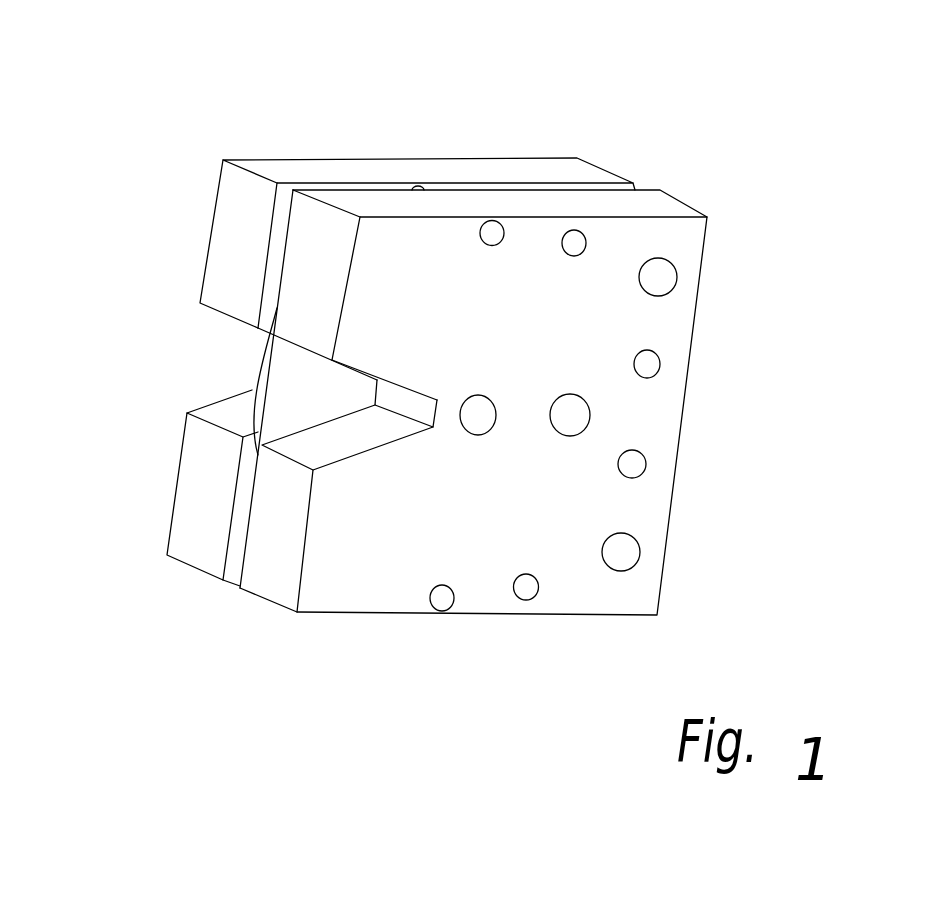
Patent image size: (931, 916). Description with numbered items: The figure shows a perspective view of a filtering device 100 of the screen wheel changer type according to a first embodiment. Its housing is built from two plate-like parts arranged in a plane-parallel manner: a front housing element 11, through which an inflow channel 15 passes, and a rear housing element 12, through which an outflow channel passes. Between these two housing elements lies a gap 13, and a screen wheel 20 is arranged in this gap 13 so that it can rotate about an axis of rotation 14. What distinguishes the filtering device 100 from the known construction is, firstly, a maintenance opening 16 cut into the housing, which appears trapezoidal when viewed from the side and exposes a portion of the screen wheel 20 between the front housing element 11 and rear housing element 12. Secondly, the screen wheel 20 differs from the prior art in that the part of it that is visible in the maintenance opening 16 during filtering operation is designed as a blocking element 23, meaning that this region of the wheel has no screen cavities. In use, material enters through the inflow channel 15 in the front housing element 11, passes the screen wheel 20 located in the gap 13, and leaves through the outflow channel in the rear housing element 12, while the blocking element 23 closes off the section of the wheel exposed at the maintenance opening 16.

The filtering device 100 is at (180, 89).
The front housing element 11 is at (357, 202).
The rear housing element 12 is at (295, 172).
The gap 13 is at (643, 185).
The axis of rotation 14 is at (482, 413).
The inflow channel 15 is at (577, 415).
The maintenance opening 16 is at (195, 375).
The screen wheel 20 is at (270, 347).
The blocking element 23 is at (338, 387).